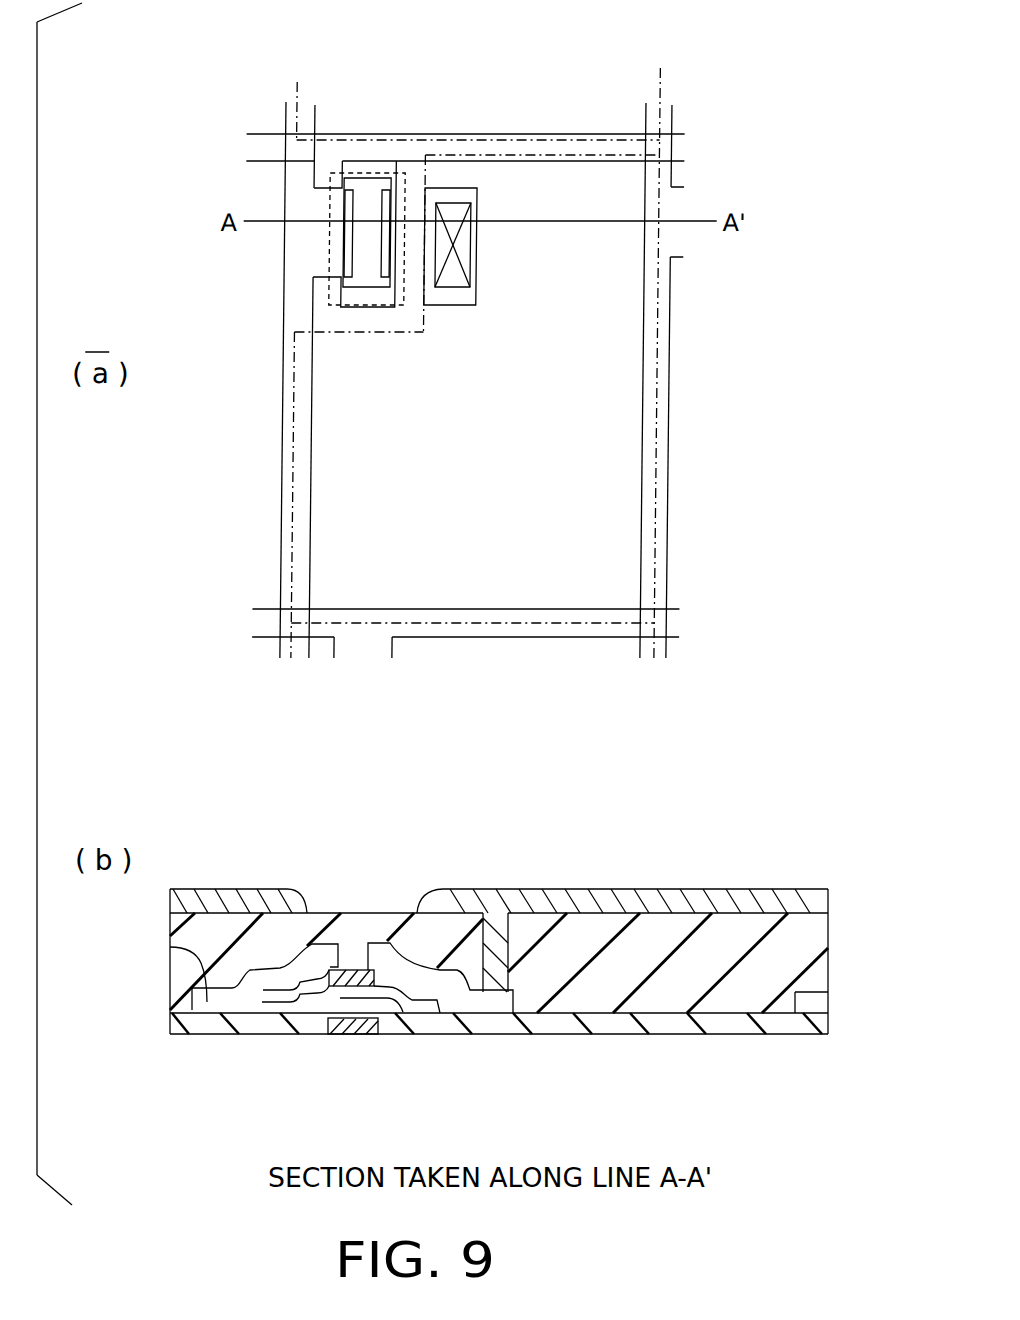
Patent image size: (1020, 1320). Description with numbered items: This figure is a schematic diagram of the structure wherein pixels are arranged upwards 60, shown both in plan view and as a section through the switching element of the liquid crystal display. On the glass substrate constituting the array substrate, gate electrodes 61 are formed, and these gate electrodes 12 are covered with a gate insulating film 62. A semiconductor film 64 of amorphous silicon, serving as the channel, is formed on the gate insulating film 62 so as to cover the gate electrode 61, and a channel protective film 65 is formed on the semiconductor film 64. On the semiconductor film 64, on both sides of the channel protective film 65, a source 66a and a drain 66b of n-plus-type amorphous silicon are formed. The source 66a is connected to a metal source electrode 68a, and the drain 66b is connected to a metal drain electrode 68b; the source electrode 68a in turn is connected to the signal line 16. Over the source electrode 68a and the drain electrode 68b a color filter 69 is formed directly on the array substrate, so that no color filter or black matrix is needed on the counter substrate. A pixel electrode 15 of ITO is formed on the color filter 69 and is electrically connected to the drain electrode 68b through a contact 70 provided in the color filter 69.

The gate electrode 12 is at (357, 132).
The pixel electrode 15 is at (543, 193).
The signal line 16 is at (286, 122).
The structure wherein pixels are arranged upwards 60 is at (382, 153).
The gate electrode 61 is at (340, 1034).
The gate insulating film 62 is at (214, 1023).
The semiconductor film 64 is at (328, 293).
The channel protective film 65 is at (367, 287).
The source 66a is at (270, 1003).
The drain 66b is at (435, 1003).
The source electrode 68a is at (323, 160).
The drain electrode 68b is at (443, 187).
The color filter 69 is at (457, 963).
The contact 70 is at (472, 263).